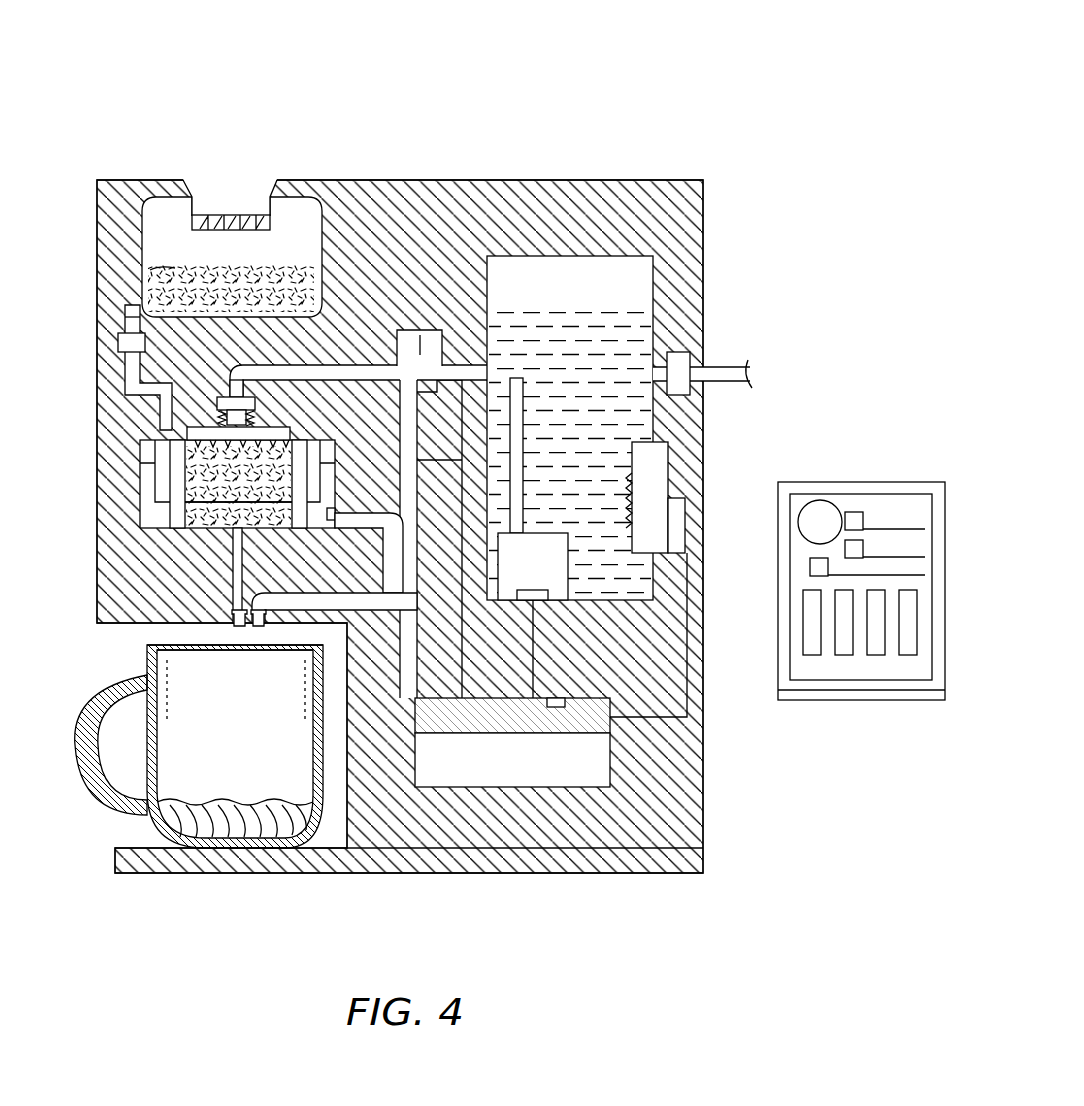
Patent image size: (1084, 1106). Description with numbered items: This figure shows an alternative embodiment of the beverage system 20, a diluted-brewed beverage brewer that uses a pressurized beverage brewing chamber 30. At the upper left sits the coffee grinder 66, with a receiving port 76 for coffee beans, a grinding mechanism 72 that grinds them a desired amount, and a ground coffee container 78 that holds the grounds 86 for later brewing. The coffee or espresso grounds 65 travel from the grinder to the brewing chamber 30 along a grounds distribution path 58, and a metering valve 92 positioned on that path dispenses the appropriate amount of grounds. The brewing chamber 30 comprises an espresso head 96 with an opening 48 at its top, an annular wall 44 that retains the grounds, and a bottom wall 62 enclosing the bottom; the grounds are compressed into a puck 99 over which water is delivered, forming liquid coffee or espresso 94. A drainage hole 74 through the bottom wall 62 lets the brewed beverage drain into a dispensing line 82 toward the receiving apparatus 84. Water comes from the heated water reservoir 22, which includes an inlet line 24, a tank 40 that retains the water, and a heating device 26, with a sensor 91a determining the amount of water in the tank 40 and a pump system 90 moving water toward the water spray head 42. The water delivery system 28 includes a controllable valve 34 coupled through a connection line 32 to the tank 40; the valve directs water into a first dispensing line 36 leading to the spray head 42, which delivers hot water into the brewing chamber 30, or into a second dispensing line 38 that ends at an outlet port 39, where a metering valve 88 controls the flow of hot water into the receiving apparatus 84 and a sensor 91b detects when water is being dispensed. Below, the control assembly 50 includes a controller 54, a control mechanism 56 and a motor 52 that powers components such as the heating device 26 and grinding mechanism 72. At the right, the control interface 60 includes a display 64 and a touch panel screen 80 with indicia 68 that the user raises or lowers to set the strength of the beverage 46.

The beverage system 20 is at (118, 62).
The heated water reservoir 22 is at (568, 256).
The inlet line 24 is at (715, 367).
The heating device 26 is at (634, 530).
The water delivery system 28 is at (405, 320).
The beverage brewing chamber 30 is at (170, 541).
The connection line 32 is at (477, 363).
The controllable valve 34 is at (425, 338).
The first dispensing line 36 is at (313, 357).
The second dispensing line 38 is at (400, 604).
The outlet port 39 is at (347, 700).
The tank 40 is at (612, 327).
The spray head 42 is at (185, 430).
The annular wall 44 is at (185, 498).
The beverage 46 is at (198, 832).
The opening 48 is at (184, 448).
The control assembly 50 is at (620, 745).
The motor 52 is at (503, 775).
The controller 54 is at (612, 716).
The control mechanism 56 is at (558, 698).
The grounds distribution path 58 is at (125, 390).
The control interface 60 is at (950, 640).
The bottom wall 62 is at (218, 541).
The display 64 is at (808, 482).
The coffee or espresso grounds 65 is at (130, 312).
The coffee grinder 66 is at (160, 190).
The indicia 68 is at (844, 658).
The grinding mechanism 72 is at (176, 256).
The drainage hole 74 is at (232, 600).
The receiving port 76 is at (226, 166).
The ground coffee container 78 is at (155, 290).
The touch panel screen 80 is at (906, 540).
The dispensing line 82 is at (238, 650).
The receiving apparatus 84 is at (168, 745).
The grounds 86 is at (327, 514).
The metering valve 88 is at (240, 627).
The pump system 90 is at (560, 533).
The sensor 91a is at (567, 593).
The sensor 91b is at (262, 627).
The metering valve 92 is at (118, 342).
The liquid coffee or espresso 94 is at (184, 832).
The espresso head 96 is at (393, 612).
The puck 99 is at (185, 478).